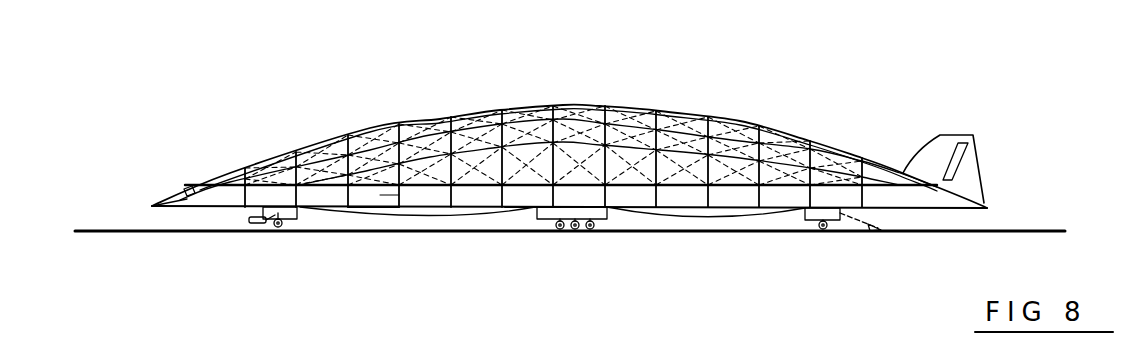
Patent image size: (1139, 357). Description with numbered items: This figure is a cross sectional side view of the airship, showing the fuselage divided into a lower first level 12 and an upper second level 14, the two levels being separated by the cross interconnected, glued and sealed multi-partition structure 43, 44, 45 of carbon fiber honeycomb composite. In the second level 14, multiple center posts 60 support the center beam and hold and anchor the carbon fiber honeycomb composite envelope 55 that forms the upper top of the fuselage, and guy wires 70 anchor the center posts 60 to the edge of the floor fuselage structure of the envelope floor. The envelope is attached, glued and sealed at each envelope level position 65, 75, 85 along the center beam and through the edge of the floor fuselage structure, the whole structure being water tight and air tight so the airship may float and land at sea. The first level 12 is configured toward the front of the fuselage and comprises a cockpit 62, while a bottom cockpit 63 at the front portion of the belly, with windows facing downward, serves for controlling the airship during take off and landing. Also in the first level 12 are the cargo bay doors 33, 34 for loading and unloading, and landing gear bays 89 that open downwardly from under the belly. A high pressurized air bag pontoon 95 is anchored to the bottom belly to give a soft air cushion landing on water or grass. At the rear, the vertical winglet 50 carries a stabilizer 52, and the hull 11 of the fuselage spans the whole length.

The hull 11 is at (534, 210).
The first level 12 is at (323, 208).
The second level 14 is at (445, 190).
The door 33 is at (258, 222).
The door 34 is at (868, 237).
The multi-partition 43 is at (365, 200).
The multi-partition 44 is at (386, 200).
The multi-partition 45 is at (480, 200).
The vertical winglet 50 is at (937, 140).
The stabilizer 52 is at (1008, 140).
The carbon fiber honeycomb composite envelope 55 is at (566, 108).
The center post 60 is at (419, 117).
The cockpit 62 is at (186, 188).
The bottom cockpit 63 is at (188, 210).
The envelope attachment 65 is at (516, 108).
The guy wire 70 is at (478, 108).
The envelope attachment 75 is at (727, 140).
The envelope attachment 85 is at (690, 136).
The landing gear bay 89 is at (290, 225).
The high pressurized air bag pontoon 95 is at (416, 212).